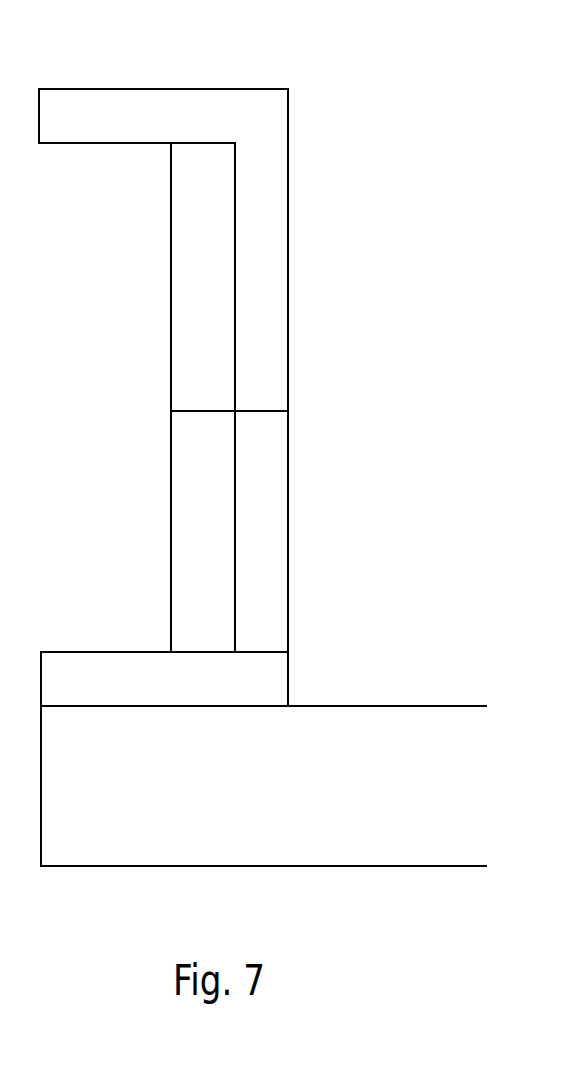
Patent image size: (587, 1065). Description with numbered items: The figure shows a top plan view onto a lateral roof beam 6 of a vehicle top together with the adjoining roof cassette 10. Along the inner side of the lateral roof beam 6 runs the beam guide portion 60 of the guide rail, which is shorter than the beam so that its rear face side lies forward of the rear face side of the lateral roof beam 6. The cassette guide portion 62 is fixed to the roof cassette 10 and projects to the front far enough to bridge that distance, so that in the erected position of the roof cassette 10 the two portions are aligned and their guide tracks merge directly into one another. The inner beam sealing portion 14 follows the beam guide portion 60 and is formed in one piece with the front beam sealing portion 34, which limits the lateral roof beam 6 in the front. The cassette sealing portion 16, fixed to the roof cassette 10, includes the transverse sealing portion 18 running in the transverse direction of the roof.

The lateral roof beam 6 is at (93, 378).
The roof cassette 10 is at (219, 804).
The inner beam sealing portion 14 is at (253, 262).
The cassette sealing portion 16 is at (265, 516).
The transverse sealing portion 18 is at (138, 678).
The front beam sealing portion 34 is at (199, 117).
The beam guide portion 60 is at (196, 272).
The cassette guide portion 62 is at (193, 508).